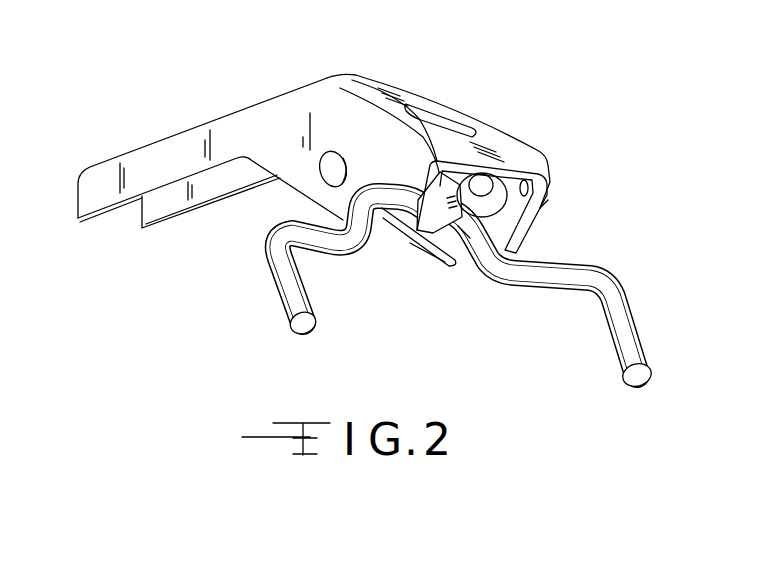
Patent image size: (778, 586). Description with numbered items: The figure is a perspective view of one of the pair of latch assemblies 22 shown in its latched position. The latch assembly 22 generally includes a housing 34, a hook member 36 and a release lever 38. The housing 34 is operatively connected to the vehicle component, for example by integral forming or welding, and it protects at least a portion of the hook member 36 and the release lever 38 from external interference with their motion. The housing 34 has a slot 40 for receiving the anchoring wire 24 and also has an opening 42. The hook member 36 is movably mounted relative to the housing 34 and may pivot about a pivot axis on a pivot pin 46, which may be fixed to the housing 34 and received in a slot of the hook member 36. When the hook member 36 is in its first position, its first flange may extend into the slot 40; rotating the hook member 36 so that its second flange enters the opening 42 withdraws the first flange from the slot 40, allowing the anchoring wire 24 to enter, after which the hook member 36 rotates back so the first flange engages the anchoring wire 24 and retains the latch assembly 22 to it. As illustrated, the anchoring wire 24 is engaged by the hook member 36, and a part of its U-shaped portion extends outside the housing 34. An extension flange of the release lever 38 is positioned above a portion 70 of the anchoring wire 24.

The latch assembly 22 is at (575, 48).
The anchoring wire 24 is at (631, 298).
The housing 34 is at (167, 138).
The hook member 36 is at (444, 262).
The release lever 38 is at (530, 220).
The slot 40 is at (411, 232).
The opening 42 is at (450, 116).
The pivot pin 46 is at (327, 172).
The portion of the anchoring wire 70 is at (483, 234).